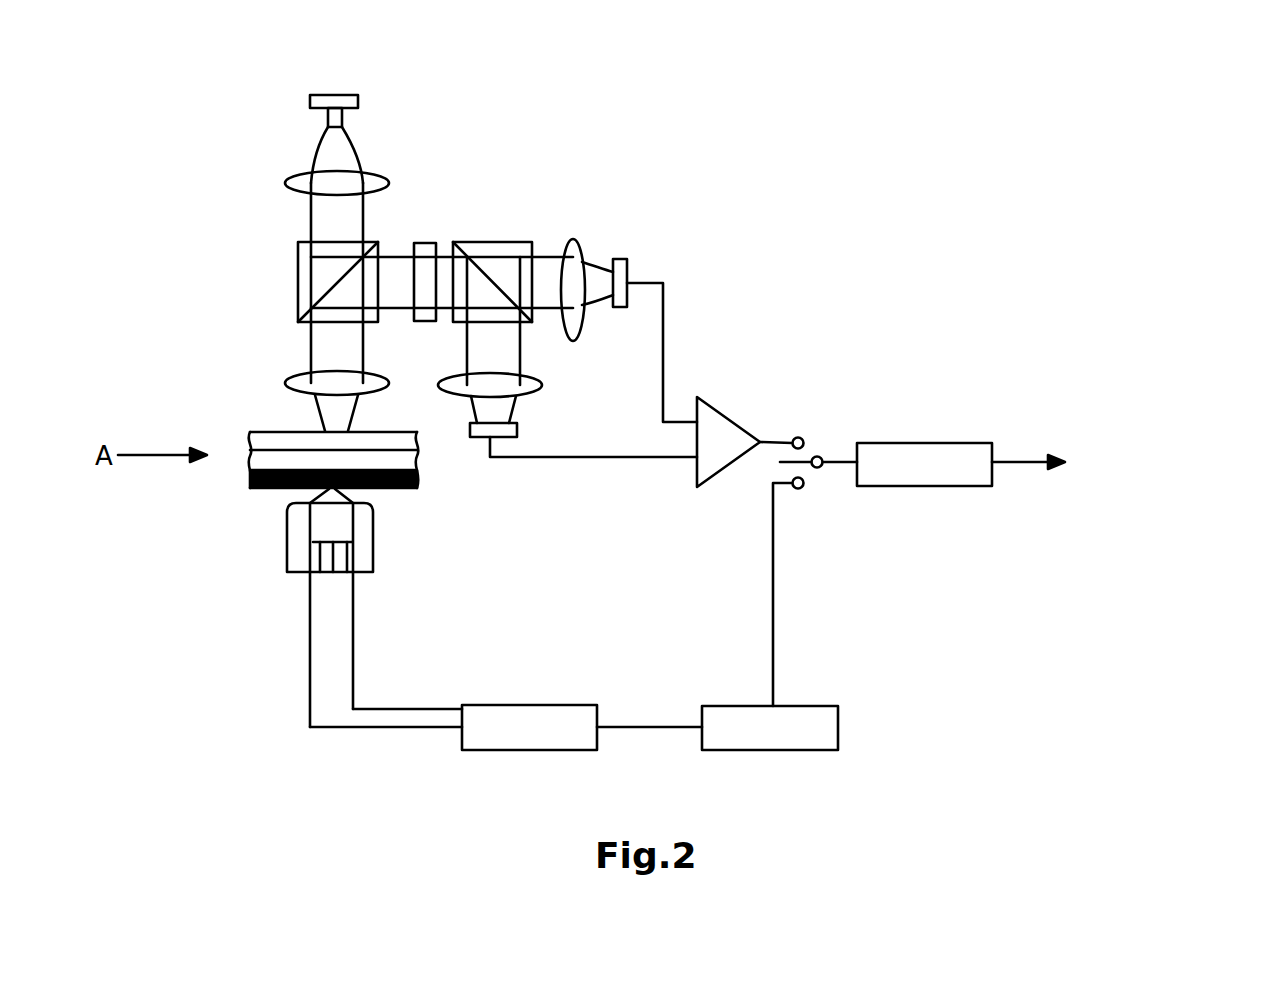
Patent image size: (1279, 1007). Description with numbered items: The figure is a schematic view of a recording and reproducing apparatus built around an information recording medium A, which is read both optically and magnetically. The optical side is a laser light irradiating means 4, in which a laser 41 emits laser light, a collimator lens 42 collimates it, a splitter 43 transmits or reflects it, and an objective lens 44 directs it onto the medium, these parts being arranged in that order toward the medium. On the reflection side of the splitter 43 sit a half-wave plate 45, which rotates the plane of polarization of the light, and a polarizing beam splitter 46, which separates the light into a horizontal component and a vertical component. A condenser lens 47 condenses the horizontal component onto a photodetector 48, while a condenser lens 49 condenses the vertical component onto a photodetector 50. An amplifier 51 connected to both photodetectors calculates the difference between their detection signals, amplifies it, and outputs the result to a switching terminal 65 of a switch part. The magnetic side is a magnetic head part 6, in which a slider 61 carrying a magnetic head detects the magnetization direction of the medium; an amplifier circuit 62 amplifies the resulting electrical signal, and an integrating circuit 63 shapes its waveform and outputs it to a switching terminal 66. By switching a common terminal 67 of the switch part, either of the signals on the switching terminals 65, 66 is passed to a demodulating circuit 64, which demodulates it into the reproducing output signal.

The laser light irradiating means 4 is at (662, 104).
The laser 41 is at (351, 99).
The collimator lens 42 is at (386, 184).
The splitter 43 is at (297, 273).
The objective lens 44 is at (290, 384).
The half-wave plate 45 is at (425, 243).
The polarizing beam splitter 46 is at (490, 243).
The condenser lens 47 is at (577, 240).
The photodetector 48 is at (628, 270).
The condenser lens 49 is at (543, 386).
The photodetector 50 is at (471, 431).
The amplifier 51 is at (718, 414).
The magnetic head part 6 is at (245, 651).
The slider 61 is at (300, 549).
The amplifier circuit 62 is at (538, 706).
The integrating circuit 63 is at (788, 706).
The demodulating circuit 64 is at (940, 443).
The switching terminal 65 is at (798, 437).
The switching terminal 66 is at (803, 489).
The common terminal 67 is at (818, 456).